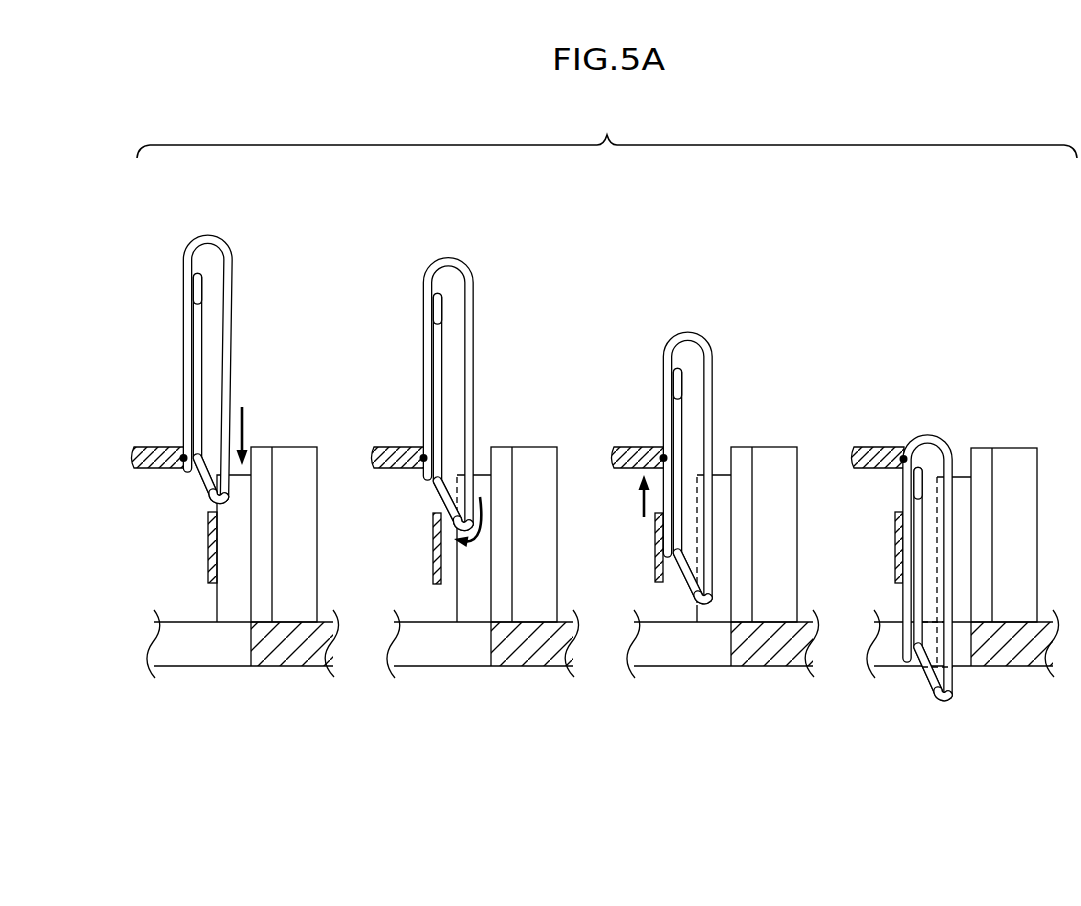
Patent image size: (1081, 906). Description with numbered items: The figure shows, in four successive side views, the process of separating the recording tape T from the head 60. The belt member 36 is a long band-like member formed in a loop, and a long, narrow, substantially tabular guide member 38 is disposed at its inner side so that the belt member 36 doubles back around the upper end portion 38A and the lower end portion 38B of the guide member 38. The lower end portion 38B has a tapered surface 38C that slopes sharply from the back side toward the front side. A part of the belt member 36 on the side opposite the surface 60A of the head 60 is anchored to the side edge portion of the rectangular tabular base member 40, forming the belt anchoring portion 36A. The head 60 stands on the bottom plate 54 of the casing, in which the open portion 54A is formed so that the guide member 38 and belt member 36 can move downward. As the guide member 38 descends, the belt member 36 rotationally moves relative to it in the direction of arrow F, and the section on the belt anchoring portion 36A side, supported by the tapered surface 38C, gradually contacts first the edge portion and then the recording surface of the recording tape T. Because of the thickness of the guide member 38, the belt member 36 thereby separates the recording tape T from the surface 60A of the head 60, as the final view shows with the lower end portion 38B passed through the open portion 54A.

The belt member 36 is at (571, 474).
The belt anchoring portion 36A is at (180, 456).
The guide member 38 is at (571, 474).
The upper end portion 38A is at (205, 255).
The lower end portion 38B is at (205, 492).
The tapered surface 38C is at (210, 508).
The base member 40 is at (133, 447).
The bottom plate 54 is at (293, 667).
The open portion 54A is at (251, 655).
The head 60 is at (293, 447).
The surface 60A is at (216, 604).
The recording tape T is at (206, 558).
The arrow F is at (252, 412).